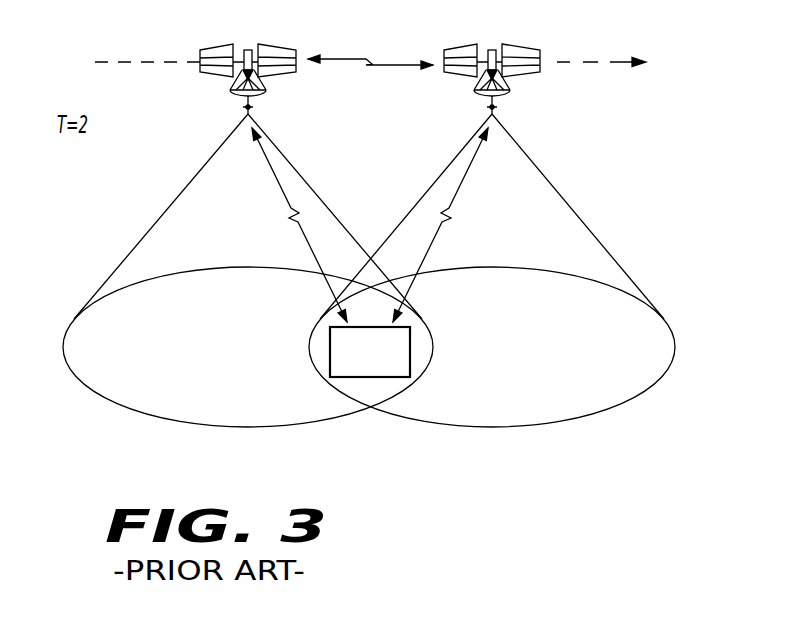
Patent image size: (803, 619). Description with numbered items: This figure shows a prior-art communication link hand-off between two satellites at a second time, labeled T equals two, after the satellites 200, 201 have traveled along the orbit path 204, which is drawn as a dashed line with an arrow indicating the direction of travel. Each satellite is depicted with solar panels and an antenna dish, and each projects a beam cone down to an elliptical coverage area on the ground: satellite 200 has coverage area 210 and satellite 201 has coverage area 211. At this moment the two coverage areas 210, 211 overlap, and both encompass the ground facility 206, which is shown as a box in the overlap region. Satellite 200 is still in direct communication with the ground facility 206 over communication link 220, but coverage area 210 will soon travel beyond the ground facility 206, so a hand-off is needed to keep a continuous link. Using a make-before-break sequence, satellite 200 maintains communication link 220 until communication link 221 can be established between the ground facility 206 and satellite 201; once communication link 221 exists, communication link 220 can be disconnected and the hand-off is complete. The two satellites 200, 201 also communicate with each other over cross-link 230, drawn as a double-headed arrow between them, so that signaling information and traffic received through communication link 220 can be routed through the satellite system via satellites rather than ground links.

The satellite 200 is at (491, 40).
The satellite 201 is at (248, 40).
The orbit path 204 is at (592, 63).
The ground facility 206 is at (392, 366).
The coverage area 210 is at (637, 398).
The coverage area 211 is at (103, 395).
The communication link 220 is at (444, 229).
The communication link 221 is at (300, 229).
The cross-link 230 is at (376, 66).